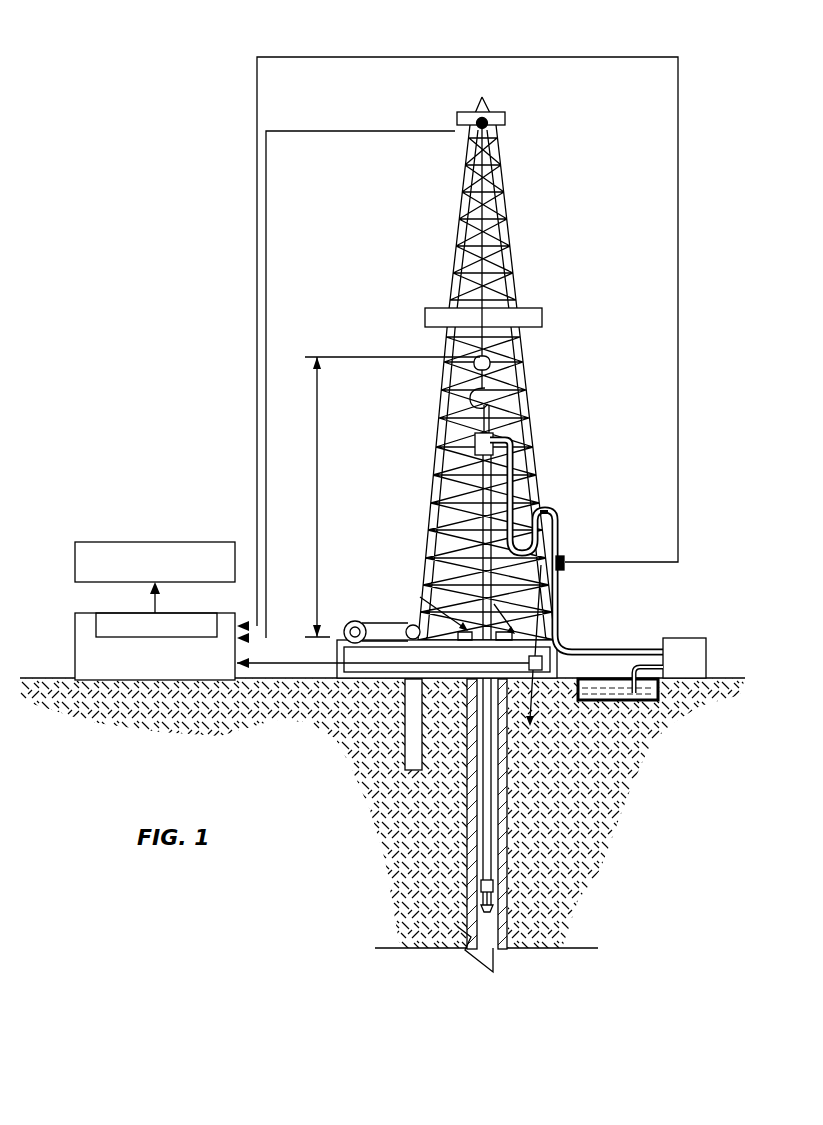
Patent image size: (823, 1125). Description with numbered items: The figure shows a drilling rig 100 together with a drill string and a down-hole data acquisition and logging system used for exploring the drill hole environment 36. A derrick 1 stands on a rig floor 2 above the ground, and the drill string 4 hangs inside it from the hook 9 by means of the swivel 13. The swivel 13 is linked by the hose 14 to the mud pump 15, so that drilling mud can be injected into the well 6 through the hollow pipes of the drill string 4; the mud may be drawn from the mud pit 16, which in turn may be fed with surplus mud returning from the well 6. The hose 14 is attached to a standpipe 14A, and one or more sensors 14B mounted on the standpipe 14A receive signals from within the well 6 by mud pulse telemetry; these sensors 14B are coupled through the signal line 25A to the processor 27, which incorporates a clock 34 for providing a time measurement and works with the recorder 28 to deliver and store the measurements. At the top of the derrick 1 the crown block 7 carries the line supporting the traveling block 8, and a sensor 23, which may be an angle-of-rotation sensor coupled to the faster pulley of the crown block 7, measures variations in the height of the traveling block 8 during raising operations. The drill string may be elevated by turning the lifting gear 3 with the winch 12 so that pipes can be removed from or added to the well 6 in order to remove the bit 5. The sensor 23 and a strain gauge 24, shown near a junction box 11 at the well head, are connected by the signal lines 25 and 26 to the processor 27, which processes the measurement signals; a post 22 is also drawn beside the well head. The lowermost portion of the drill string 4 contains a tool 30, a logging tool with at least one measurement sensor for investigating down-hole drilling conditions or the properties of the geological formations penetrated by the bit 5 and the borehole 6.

The drilling rig 100 is at (200, 52).
The derrick 1 is at (527, 458).
The rig floor 2 is at (373, 686).
The lifting gear 3 is at (490, 352).
The drill string 4 is at (486, 797).
The bit 5 is at (502, 902).
The well 6 is at (484, 932).
The crown block 7 is at (492, 112).
The traveling block 8 is at (472, 368).
The hook 9 is at (440, 434).
The sensor junction box 11 is at (540, 670).
The winch 12 is at (400, 620).
The swivel 13 is at (472, 452).
The hose 14 is at (553, 527).
The standpipe 14A is at (556, 546).
The sensors 14B is at (562, 566).
The mud pump 15 is at (690, 640).
The mud pit 16 is at (628, 694).
The anchor post 22 is at (405, 743).
The sensor 23 is at (496, 134).
The strain gauge 24 is at (548, 705).
The signal line 25 is at (268, 334).
The signal line 25A is at (679, 333).
The signal line 26 is at (326, 660).
The processor 27 is at (132, 634).
The recorder 28 is at (92, 542).
The tool 30 is at (488, 857).
The clock 34 is at (78, 613).
The drill hole environment 36 is at (615, 777).